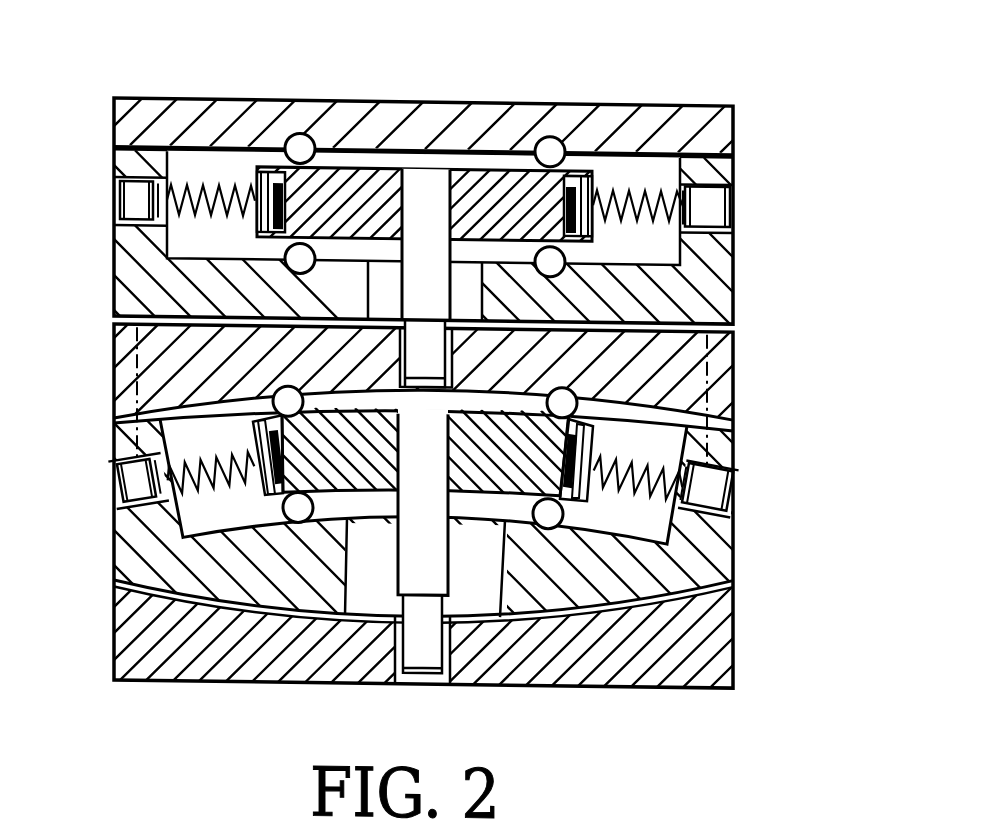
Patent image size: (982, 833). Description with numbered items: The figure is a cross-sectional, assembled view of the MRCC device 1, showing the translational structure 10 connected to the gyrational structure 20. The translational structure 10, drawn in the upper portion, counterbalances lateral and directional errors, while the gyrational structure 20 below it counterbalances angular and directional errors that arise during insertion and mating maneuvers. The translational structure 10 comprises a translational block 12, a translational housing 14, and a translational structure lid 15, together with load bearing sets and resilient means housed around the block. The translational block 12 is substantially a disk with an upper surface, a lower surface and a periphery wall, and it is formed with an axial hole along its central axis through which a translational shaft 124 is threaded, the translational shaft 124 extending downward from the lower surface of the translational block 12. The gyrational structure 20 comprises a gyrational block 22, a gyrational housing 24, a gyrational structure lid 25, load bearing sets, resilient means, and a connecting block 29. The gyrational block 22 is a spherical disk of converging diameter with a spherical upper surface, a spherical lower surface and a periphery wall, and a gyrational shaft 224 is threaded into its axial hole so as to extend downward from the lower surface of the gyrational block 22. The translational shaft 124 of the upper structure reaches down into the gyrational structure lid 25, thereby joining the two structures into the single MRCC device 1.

The MRCC device 1 is at (846, 330).
The translational structure 10 is at (799, 208).
The translational block 12 is at (351, 172).
The translational shaft 124 is at (429, 186).
The translational housing 14 is at (128, 263).
The translational structure lid 15 is at (683, 116).
The gyrational structure 20 is at (786, 468).
The gyrational block 22 is at (262, 402).
The gyrational shaft 224 is at (440, 553).
The gyrational housing 24 is at (733, 548).
The gyrational structure lid 25 is at (722, 375).
The connecting block 29 is at (722, 624).